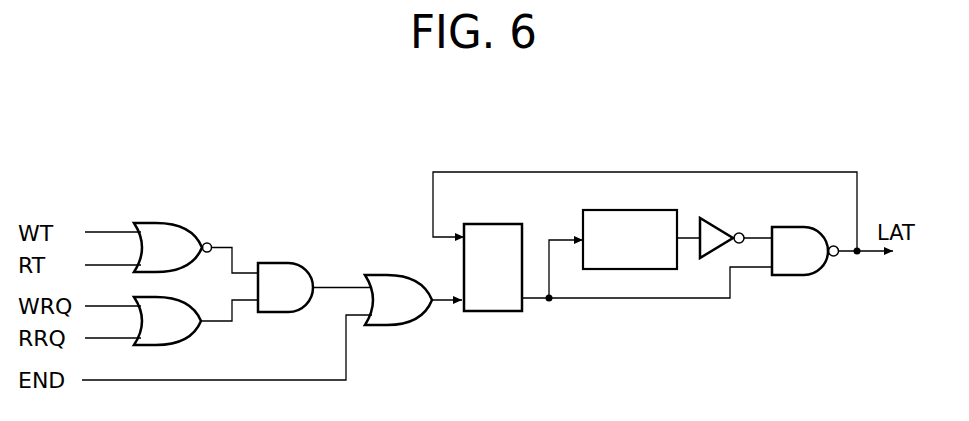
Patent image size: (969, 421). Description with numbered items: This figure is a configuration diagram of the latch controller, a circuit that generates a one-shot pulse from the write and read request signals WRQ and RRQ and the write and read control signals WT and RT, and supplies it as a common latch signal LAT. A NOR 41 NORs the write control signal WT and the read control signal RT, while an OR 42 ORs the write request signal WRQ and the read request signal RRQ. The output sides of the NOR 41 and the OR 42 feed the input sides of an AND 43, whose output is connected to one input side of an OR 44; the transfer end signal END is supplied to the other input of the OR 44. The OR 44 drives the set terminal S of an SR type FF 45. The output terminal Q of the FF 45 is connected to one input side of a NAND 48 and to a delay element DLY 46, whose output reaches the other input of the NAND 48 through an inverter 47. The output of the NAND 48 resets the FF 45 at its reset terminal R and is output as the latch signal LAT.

The NOR 41 is at (153, 222).
The OR gate 42 is at (205, 330).
The AND 43 is at (276, 262).
The OR 44 is at (393, 328).
The SR type FF 45 is at (500, 312).
The delay element (DLY) 46 is at (630, 210).
The inverter 47 is at (722, 220).
The NAND 48 is at (798, 278).